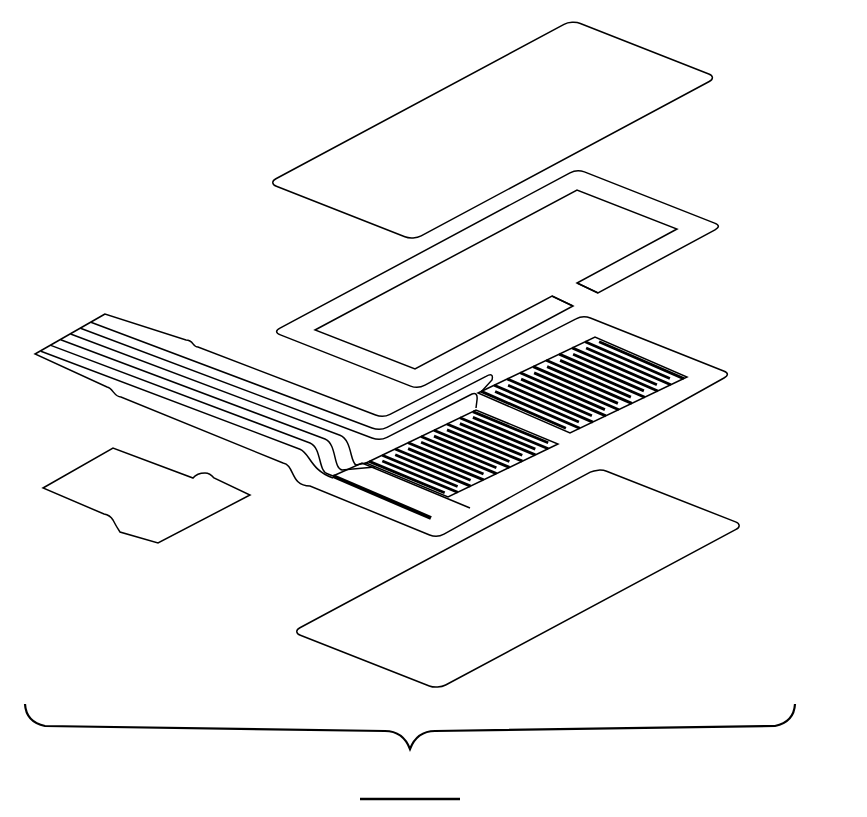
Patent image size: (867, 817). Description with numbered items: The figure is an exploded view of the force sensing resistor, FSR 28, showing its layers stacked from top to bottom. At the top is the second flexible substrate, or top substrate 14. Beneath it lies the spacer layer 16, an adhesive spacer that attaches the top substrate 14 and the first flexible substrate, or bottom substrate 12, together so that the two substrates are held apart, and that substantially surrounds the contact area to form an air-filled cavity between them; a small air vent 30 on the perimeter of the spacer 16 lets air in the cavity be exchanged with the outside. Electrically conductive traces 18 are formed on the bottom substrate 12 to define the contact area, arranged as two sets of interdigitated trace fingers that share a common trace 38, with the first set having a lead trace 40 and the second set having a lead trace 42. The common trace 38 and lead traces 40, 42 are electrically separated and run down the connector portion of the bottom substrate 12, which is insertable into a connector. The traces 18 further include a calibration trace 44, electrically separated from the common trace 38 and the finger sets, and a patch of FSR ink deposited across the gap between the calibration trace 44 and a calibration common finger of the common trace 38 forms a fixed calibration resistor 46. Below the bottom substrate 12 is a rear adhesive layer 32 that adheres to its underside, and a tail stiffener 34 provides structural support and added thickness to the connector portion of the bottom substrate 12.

The FSR 28 is at (215, 120).
The second flexible substrate 14 is at (748, 80).
The spacer layer 16 is at (753, 237).
The air vent 30 is at (640, 275).
The first flexible substrate 12 is at (757, 378).
The electrically conductive traces 18 is at (673, 410).
The rear adhesive layer 32 is at (758, 528).
The tail stiffener 34 is at (110, 543).
The common trace 38 is at (86, 365).
The lead trace 40 is at (98, 314).
The lead trace 42 is at (78, 331).
The calibration trace 44 is at (68, 341).
The calibration resistor 46 is at (370, 489).